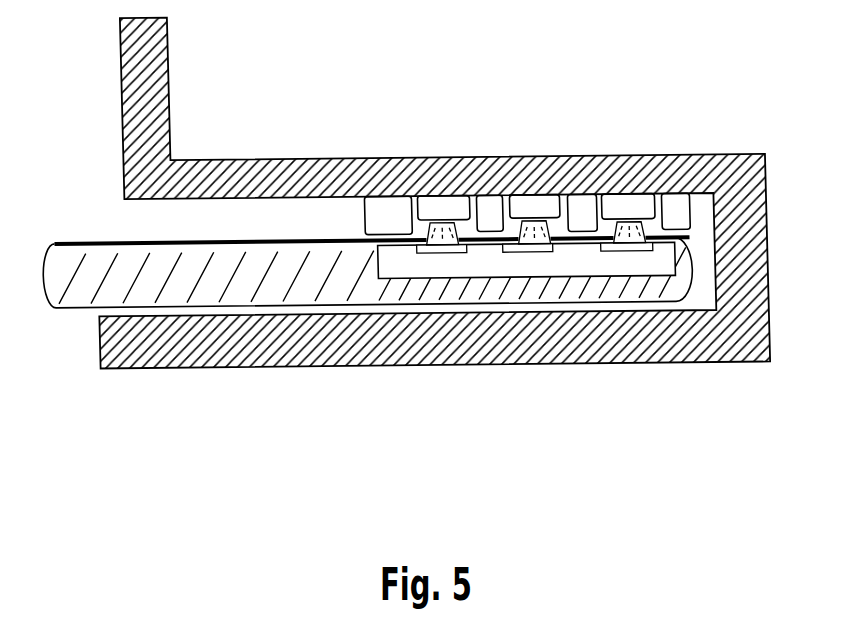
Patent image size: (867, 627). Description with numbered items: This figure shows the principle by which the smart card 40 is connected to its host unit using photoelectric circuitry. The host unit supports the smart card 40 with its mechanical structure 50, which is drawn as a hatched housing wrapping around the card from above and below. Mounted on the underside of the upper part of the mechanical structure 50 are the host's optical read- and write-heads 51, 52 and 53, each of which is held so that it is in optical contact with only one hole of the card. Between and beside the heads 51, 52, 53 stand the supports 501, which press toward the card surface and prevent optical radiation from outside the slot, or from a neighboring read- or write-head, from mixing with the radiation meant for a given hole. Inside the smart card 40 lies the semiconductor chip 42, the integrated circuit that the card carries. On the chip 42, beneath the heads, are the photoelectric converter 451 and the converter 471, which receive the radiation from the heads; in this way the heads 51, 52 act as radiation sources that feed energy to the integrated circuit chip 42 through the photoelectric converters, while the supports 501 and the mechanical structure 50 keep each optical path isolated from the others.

The mechanical structure 50 is at (172, 160).
The supports 501 is at (385, 200).
The optical read- and write-head 51 is at (447, 200).
The optical read- and write-head 52 is at (641, 197).
The optical read- and write-head 53 is at (538, 200).
The smart card 40 is at (120, 282).
The semiconductor chip 42 is at (585, 272).
The photoelectric converter 451 is at (437, 255).
The second pad 471 is at (633, 247).